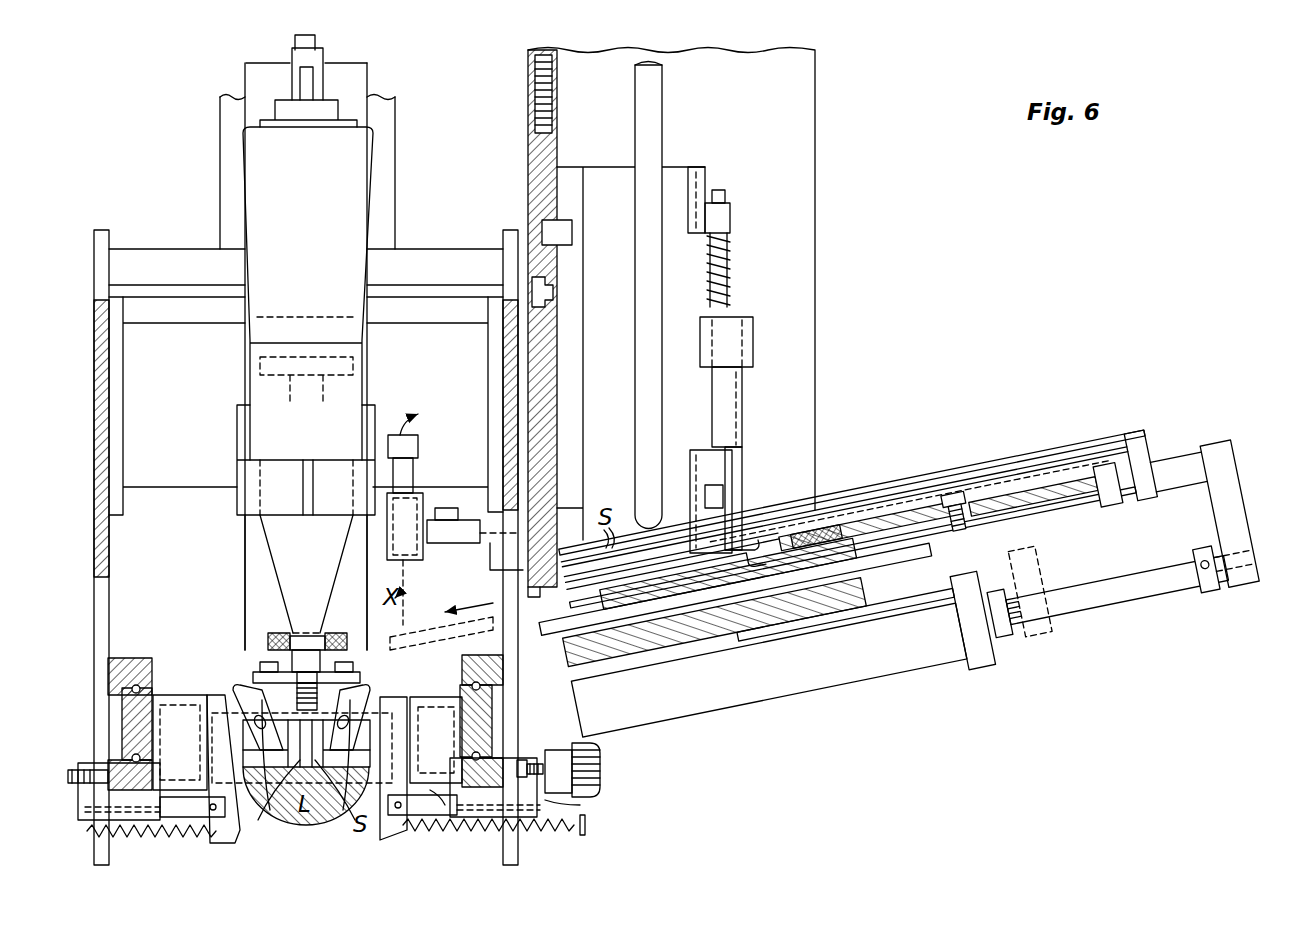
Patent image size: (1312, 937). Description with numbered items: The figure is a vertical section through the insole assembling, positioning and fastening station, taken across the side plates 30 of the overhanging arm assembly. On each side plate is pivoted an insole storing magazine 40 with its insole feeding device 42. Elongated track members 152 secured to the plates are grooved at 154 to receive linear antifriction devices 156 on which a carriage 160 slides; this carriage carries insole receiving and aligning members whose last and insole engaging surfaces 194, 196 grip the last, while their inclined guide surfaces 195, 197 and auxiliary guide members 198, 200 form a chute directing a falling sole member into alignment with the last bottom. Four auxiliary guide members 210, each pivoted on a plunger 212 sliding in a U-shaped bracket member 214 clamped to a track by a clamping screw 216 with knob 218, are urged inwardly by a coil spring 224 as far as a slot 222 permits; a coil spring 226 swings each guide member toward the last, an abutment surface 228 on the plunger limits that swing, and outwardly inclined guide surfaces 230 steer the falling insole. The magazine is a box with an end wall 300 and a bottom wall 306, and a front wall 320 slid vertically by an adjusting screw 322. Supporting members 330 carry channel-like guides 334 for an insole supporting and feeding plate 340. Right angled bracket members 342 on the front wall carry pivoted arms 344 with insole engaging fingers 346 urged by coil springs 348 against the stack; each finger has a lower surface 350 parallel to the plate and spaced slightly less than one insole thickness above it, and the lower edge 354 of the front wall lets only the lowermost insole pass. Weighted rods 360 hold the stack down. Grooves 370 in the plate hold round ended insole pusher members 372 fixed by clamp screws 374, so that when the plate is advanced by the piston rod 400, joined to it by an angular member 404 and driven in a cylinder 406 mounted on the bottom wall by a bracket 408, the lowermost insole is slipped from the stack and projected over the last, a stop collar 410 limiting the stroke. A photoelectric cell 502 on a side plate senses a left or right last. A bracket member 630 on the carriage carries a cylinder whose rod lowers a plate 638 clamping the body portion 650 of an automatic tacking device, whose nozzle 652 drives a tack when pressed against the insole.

The side plate 30 is at (123, 346).
The insole storing magazine 40 is at (822, 108).
The insole feeding device 42 is at (1232, 436).
The track member 152 is at (108, 657).
The groove 154 is at (125, 690).
The linear antifriction device 156 is at (100, 770).
The carriage 160 is at (212, 692).
The last and insole engaging surface 194 is at (280, 800).
The inclined guide surface 195 is at (292, 697).
The last and insole engaging surface 196 is at (335, 800).
The inclined guide surface 197 is at (340, 699).
The auxiliary guide member 198 is at (240, 684).
The auxiliary guide member 200 is at (357, 673).
The auxiliary guide member 210 is at (205, 720).
The plunger 212 is at (205, 817).
The U-shaped bracket member 214 is at (215, 790).
The clamping screw 216 is at (592, 751).
The knob 218 is at (600, 772).
The slot 222 is at (440, 797).
The coil spring 224 is at (585, 806).
The coil spring 226 is at (118, 831).
The abutment surface 228 is at (385, 805).
The outwardly inclined guide surface 230 is at (235, 733).
The end wall 300 is at (815, 153).
The bottom wall 306 is at (668, 645).
The front wall 320 is at (557, 104).
The adjusting screw 322 is at (535, 88).
The supporting member 330 is at (1066, 447).
The channel-like guide 334 is at (1118, 497).
The insole supporting and feeding plate 340 is at (1078, 538).
The right angled bracket member 342 is at (690, 167).
The arm 344 is at (753, 341).
The insole engaging finger 346 is at (742, 464).
The coil spring 348 is at (754, 270).
The surface 350 is at (760, 540).
The lower edge 354 is at (528, 590).
The rod 360 is at (635, 351).
The groove 370 is at (982, 510).
The insole pusher member 372 is at (870, 540).
The clamp screw 374 is at (960, 490).
The piston rod 400 is at (1138, 588).
The angular member 404 is at (1050, 626).
The cylinder 406 is at (890, 670).
The bracket 408 is at (918, 592).
The stop collar 410 is at (1215, 582).
The photoelectric cell 502 is at (403, 560).
The bracket member 630 is at (245, 530).
The plate 638 is at (240, 468).
The body portion 650 is at (250, 418).
The nozzle 652 is at (275, 545).